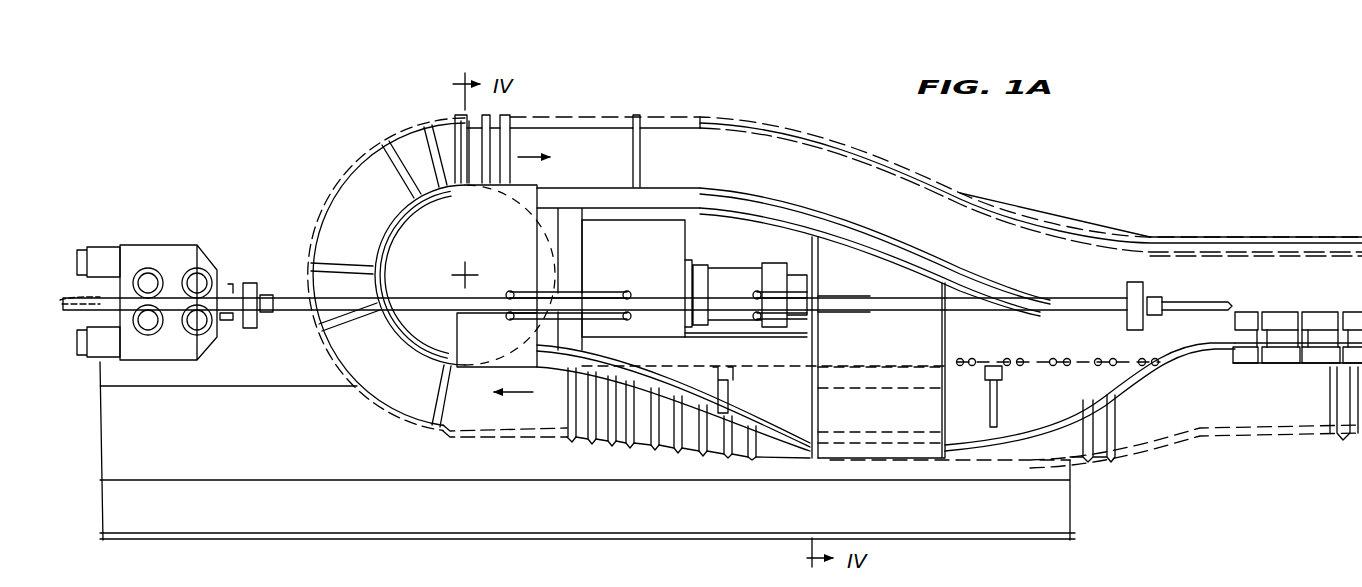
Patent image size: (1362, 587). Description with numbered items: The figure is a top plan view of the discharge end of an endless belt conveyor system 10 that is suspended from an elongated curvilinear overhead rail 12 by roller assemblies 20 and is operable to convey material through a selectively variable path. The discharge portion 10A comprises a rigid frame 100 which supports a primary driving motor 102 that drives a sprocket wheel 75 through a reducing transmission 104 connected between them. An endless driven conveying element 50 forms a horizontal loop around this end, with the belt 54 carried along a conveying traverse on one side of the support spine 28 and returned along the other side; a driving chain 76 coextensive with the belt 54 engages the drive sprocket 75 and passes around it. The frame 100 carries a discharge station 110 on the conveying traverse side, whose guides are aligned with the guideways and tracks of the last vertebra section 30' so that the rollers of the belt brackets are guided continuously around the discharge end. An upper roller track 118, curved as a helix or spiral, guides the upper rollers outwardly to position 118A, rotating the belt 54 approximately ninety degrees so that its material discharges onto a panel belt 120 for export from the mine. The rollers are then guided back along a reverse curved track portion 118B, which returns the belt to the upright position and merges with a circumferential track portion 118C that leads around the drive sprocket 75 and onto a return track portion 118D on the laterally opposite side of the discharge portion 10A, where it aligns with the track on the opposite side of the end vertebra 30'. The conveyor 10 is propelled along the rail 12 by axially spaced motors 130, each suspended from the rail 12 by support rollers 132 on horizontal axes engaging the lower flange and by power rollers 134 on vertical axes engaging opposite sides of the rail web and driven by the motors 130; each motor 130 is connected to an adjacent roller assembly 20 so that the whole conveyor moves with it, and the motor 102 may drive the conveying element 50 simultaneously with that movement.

The endless belt conveyor system 10 is at (1027, 182).
The discharge portion 10A is at (1137, 272).
The overhead rail 12 is at (290, 303).
The roller assembly 20 is at (860, 297).
The support spine 28 is at (1330, 327).
The last vertebra section 30' is at (1297, 315).
The conveying element 50 is at (1282, 410).
The belt 54 is at (603, 417).
The sprocket wheel 75 is at (547, 240).
The endless chain 76 is at (1027, 358).
The rigid frame 100 is at (703, 203).
The primary driving motor 102 is at (780, 270).
The reducing transmission 104 is at (667, 238).
The discharge station 110 is at (803, 463).
The upper roller track 118 is at (1067, 413).
The discharge position of track 118A is at (913, 457).
The reverse curved track portion 118B is at (688, 403).
The circumferential track portion 118C is at (387, 253).
The return track portion 118D is at (755, 207).
The panel belt 120 is at (495, 507).
The motor 130 is at (152, 255).
The support roller 132 is at (100, 291).
The power roller 134 is at (197, 320).